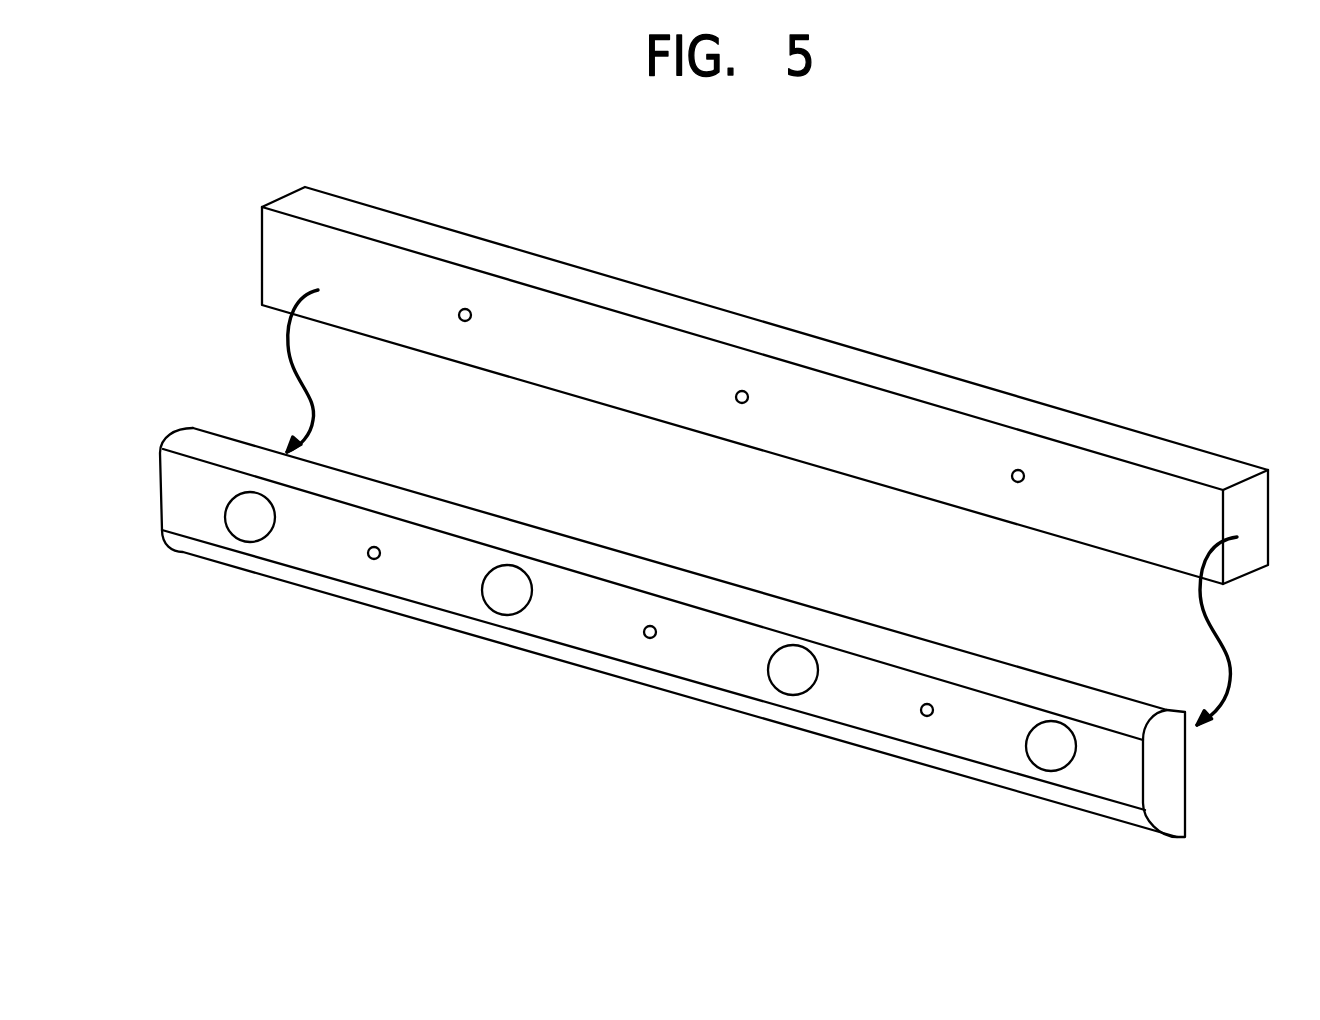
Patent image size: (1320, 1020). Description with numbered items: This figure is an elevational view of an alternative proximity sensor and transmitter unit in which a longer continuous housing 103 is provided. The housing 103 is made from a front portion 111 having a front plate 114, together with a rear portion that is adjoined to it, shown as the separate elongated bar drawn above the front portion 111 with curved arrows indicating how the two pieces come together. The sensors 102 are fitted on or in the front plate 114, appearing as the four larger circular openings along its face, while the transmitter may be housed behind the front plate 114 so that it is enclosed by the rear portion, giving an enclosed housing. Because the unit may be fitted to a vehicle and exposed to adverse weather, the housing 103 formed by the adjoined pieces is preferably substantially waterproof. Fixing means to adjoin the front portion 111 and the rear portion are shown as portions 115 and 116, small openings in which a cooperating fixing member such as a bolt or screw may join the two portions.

The housing 103 is at (765, 350).
The front portion 111 is at (672, 670).
The sensors 102 is at (250, 517).
The front plate 114 is at (575, 622).
The fixing portion 115 is at (645, 627).
The fixing portion 116 is at (738, 389).